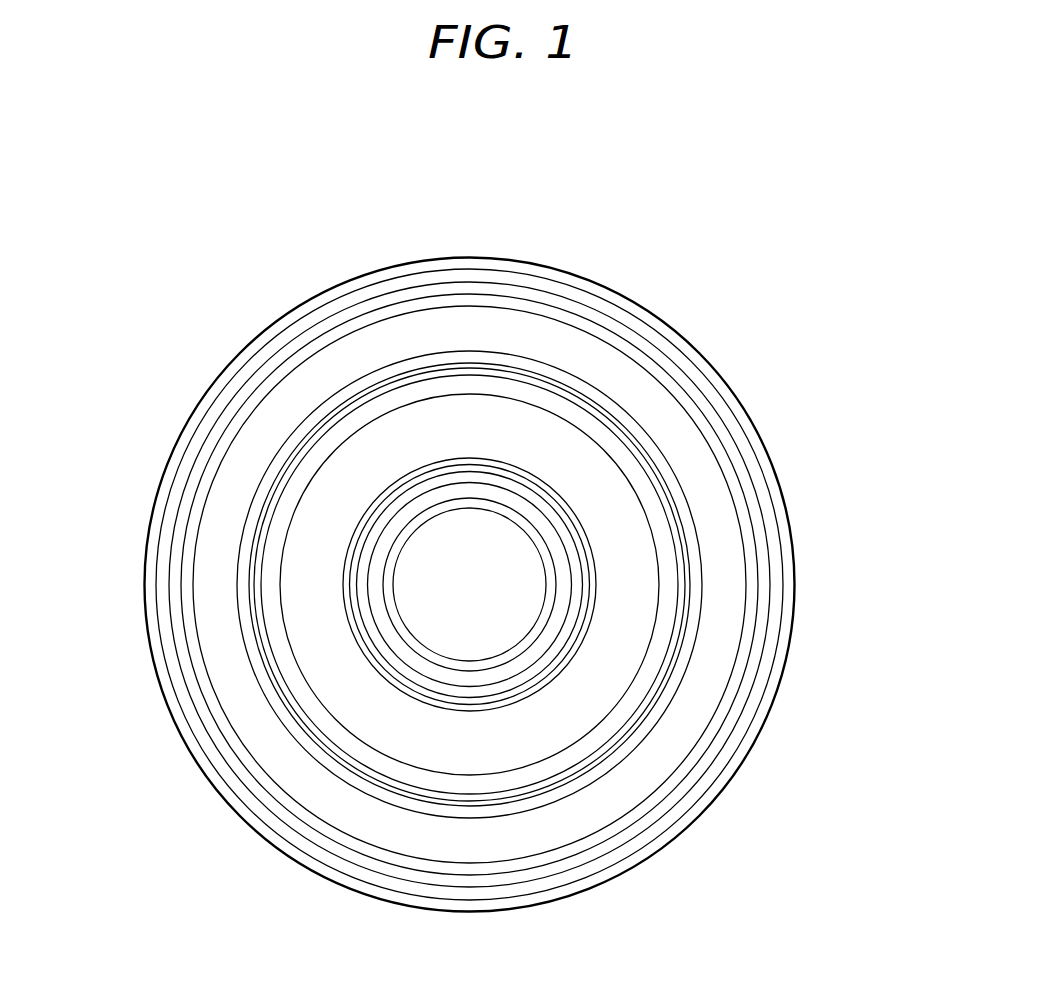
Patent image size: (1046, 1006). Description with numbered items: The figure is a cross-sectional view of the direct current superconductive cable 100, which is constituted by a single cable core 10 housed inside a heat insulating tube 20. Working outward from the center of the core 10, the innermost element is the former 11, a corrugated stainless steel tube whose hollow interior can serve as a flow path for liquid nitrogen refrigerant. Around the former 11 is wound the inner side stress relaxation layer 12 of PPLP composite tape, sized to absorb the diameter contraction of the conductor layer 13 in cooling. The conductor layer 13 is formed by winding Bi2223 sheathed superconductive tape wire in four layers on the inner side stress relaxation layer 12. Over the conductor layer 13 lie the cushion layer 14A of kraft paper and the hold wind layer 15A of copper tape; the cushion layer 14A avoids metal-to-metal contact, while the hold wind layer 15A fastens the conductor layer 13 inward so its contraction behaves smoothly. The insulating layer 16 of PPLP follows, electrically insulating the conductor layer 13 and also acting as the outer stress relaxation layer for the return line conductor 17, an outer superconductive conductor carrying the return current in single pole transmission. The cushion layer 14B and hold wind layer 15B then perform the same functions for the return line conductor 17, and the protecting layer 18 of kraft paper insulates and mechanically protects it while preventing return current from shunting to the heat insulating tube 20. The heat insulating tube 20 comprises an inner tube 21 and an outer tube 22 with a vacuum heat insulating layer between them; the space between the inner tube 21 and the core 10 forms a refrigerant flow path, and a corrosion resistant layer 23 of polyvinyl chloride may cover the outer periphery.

The direct current superconductive cable 100 is at (638, 212).
The core 10 is at (347, 387).
The former 11 is at (400, 633).
The inner side stress relaxation layer 12 is at (377, 607).
The conductor layer 13 is at (363, 577).
The cushion layer 14A is at (380, 507).
The cushion layer 14B is at (492, 797).
The hold wind layer 15A is at (393, 482).
The hold wind layer 15B is at (552, 796).
The insulating layer 16 is at (465, 420).
The return line conductor 17 is at (437, 779).
The protecting layer 18 is at (652, 722).
The heat insulating tube 20 is at (564, 584).
The inner tube 21 is at (687, 405).
The outer tube 22 is at (753, 478).
The corrosion resistant layer 23 is at (785, 557).